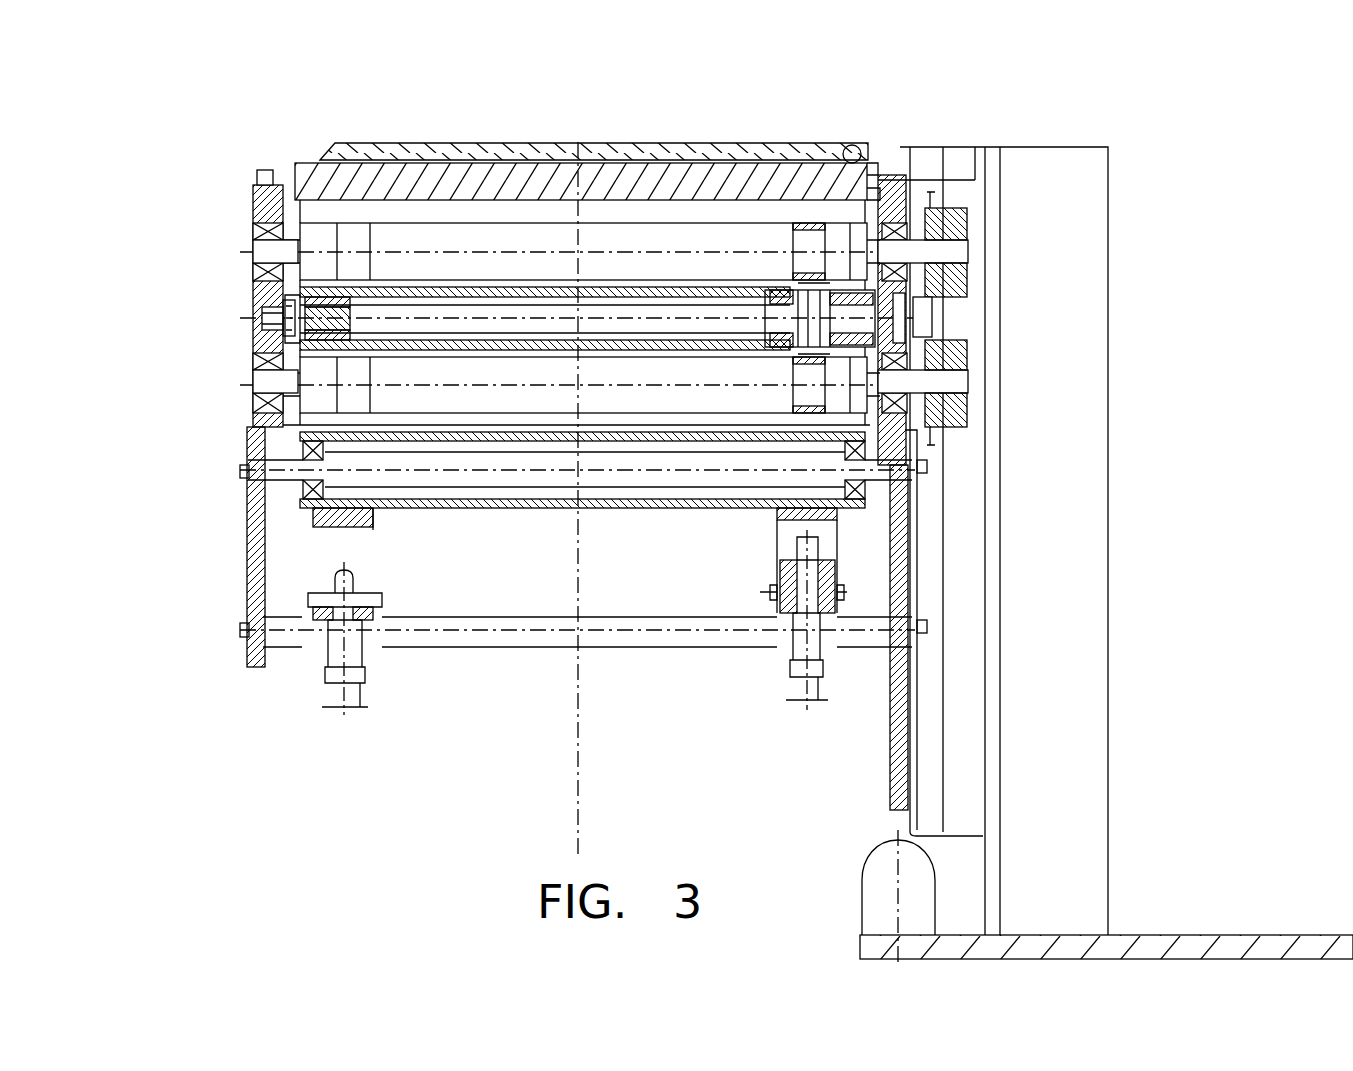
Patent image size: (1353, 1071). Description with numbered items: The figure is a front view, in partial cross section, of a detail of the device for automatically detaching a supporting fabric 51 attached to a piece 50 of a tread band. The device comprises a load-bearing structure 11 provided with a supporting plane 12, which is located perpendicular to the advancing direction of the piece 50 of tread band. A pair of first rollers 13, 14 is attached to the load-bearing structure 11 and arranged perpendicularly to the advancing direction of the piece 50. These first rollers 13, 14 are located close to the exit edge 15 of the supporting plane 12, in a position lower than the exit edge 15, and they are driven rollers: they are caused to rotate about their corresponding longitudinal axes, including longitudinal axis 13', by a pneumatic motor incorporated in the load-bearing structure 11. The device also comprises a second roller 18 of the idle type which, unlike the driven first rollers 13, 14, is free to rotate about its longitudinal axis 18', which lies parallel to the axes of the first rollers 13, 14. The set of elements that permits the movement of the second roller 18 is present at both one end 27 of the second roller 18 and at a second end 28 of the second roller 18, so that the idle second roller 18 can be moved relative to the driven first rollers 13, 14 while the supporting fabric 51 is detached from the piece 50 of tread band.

The load-bearing structure 11 is at (958, 738).
The supporting plane 12 is at (663, 173).
The first roller 13 is at (566, 192).
The longitudinal axis of first roller 13' is at (566, 246).
The first roller 14 is at (325, 402).
The exit edge 15 is at (470, 157).
The second roller 18 is at (259, 298).
The longitudinal axis of second roller 18' is at (580, 535).
The end of second roller 27 is at (290, 327).
The second end of second roller 28 is at (900, 313).
The piece of tread band 50 is at (614, 140).
The supporting fabric 51 is at (868, 150).